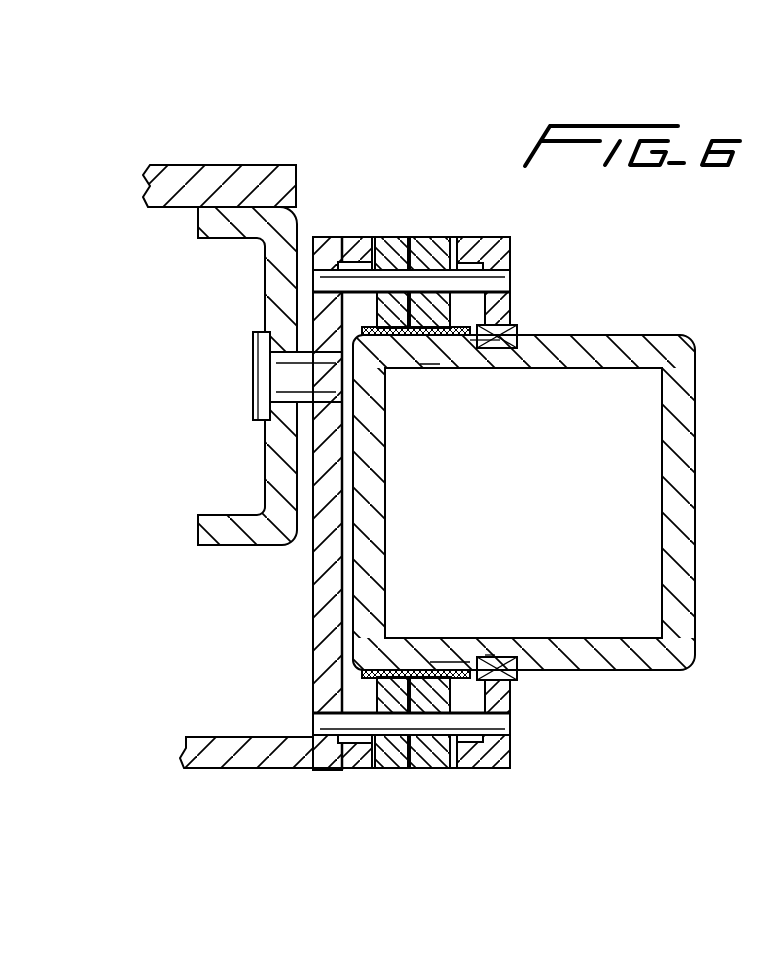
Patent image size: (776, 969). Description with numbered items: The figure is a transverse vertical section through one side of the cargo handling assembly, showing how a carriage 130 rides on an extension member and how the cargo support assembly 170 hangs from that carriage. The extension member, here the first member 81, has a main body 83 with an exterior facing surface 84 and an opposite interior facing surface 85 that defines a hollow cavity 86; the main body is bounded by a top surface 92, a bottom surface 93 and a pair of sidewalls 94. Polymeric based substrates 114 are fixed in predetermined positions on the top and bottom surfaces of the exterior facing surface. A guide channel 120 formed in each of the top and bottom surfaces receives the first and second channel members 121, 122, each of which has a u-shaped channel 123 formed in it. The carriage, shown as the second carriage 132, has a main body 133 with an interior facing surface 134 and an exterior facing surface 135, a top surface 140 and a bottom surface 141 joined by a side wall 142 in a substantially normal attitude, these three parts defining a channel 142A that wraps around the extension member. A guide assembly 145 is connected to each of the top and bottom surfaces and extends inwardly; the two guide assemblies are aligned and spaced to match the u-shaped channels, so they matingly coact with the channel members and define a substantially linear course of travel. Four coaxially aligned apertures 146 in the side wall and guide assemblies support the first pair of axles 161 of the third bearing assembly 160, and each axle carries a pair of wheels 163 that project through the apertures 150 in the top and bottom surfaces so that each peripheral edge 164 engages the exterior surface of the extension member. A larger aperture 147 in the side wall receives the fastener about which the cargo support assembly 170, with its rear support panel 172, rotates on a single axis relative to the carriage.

The first member 81 is at (563, 481).
The main body 83 is at (563, 533).
The exterior facing surface 84 is at (563, 501).
The interior facing surface 85 is at (662, 480).
The cavity 86 is at (550, 509).
The top surface 92 is at (563, 501).
The bottom surface 93 is at (558, 533).
The sidewalls 94 is at (386, 496).
The polymeric based substrate 114 is at (425, 368).
The guide channel 120 is at (488, 370).
The first channel member 121 is at (486, 368).
The second channel member 122 is at (496, 640).
The u-shaped channel 123 is at (510, 326).
The carriage 130 is at (396, 476).
The second carriage 132 is at (364, 237).
The main body 133 is at (276, 503).
The interior facing surface 134 is at (276, 503).
The exterior facing surface 135 is at (342, 590).
The top surface 140 is at (500, 237).
The bottom surface 141 is at (356, 772).
The side wall 142 is at (282, 503).
The channel 142A is at (355, 690).
The guide assembly 145 is at (537, 506).
The apertures 146 is at (324, 237).
The larger aperture 147 is at (268, 406).
The apertures 150 is at (450, 236).
The third bearing assembly 160 is at (362, 302).
The first pair of axles 161 is at (326, 281).
The wheels 163 is at (445, 236).
The peripheral edge 164 is at (446, 772).
The cargo support assembly 170 is at (220, 307).
The rear support panel 172 is at (214, 165).